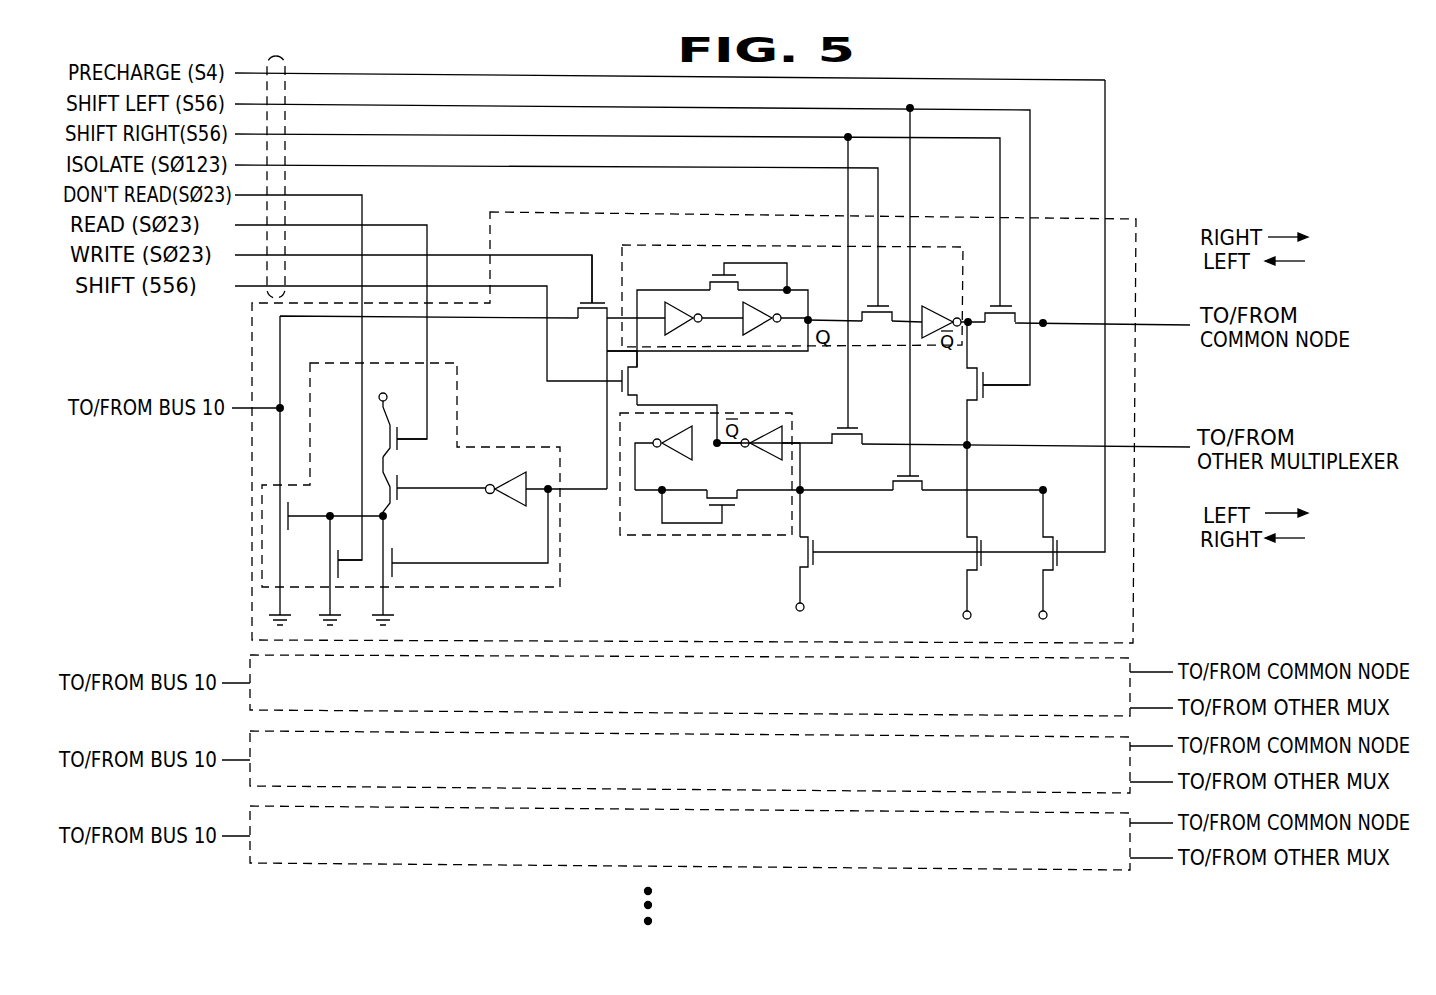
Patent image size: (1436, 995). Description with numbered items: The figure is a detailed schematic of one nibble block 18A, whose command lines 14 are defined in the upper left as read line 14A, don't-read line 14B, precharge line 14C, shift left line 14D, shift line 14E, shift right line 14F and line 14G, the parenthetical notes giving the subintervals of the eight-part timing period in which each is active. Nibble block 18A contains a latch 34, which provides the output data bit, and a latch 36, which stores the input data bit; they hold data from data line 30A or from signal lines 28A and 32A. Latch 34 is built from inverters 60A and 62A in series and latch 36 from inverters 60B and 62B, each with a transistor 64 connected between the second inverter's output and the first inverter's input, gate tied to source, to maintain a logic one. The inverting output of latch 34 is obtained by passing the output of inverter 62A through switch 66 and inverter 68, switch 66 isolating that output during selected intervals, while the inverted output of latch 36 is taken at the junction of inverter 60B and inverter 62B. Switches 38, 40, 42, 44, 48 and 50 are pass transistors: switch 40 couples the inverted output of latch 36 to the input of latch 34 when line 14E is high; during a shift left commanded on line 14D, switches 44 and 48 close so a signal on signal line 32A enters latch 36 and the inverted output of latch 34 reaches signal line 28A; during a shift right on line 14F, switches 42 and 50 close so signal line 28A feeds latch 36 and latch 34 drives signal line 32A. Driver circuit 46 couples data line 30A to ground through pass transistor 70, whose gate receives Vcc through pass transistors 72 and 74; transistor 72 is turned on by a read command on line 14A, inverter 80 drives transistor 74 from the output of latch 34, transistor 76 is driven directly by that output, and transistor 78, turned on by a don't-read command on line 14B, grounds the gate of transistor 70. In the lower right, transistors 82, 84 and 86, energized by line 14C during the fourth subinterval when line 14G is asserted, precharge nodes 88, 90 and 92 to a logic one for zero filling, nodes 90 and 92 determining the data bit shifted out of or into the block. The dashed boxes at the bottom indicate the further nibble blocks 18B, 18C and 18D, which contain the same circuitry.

The command lines 14 is at (284, 62).
The read line 14A is at (427, 338).
The don't-read line 14B is at (362, 336).
The precharge line 14C is at (1103, 402).
The shift left command line 14D is at (428, 104).
The shift line 14E is at (552, 381).
The shift right command line 14F is at (460, 134).
The precharge command line 14G is at (545, 73).
The nibble block 18A is at (624, 618).
The multiplexer cell 18B is at (667, 699).
The multiplexer cell 18C is at (671, 775).
The multiplexer cell 18D is at (674, 852).
The signal line 28A is at (1157, 445).
The data line 30A is at (232, 412).
The signal line 32A is at (1160, 322).
The latch 34 is at (660, 247).
The latch 36 is at (620, 535).
The switch 38 is at (594, 318).
The switch 40 is at (644, 378).
The switch 42 is at (990, 307).
The switch 44 is at (968, 389).
The driver circuit 46 is at (484, 586).
The switch 48 is at (905, 496).
The switch 50 is at (856, 430).
The inverter 60A is at (698, 300).
The inverter 60B is at (764, 466).
The inverter 62A is at (768, 300).
The inverter 62B is at (672, 466).
The transistor 64 is at (718, 265).
The switch 66 is at (859, 311).
The inverter 68 is at (941, 313).
The pass transistor 70 is at (293, 509).
The pass transistor 72 is at (402, 447).
The pass transistor 74 is at (402, 495).
The transistor 76 is at (395, 558).
The transistor 78 is at (344, 567).
The inverter 80 is at (507, 504).
The precharge transistor 82 is at (820, 560).
The precharge transistor 84 is at (975, 575).
The precharge transistor 86 is at (1050, 575).
The node 88 is at (804, 494).
The node 90 is at (969, 448).
The node 92 is at (1046, 492).